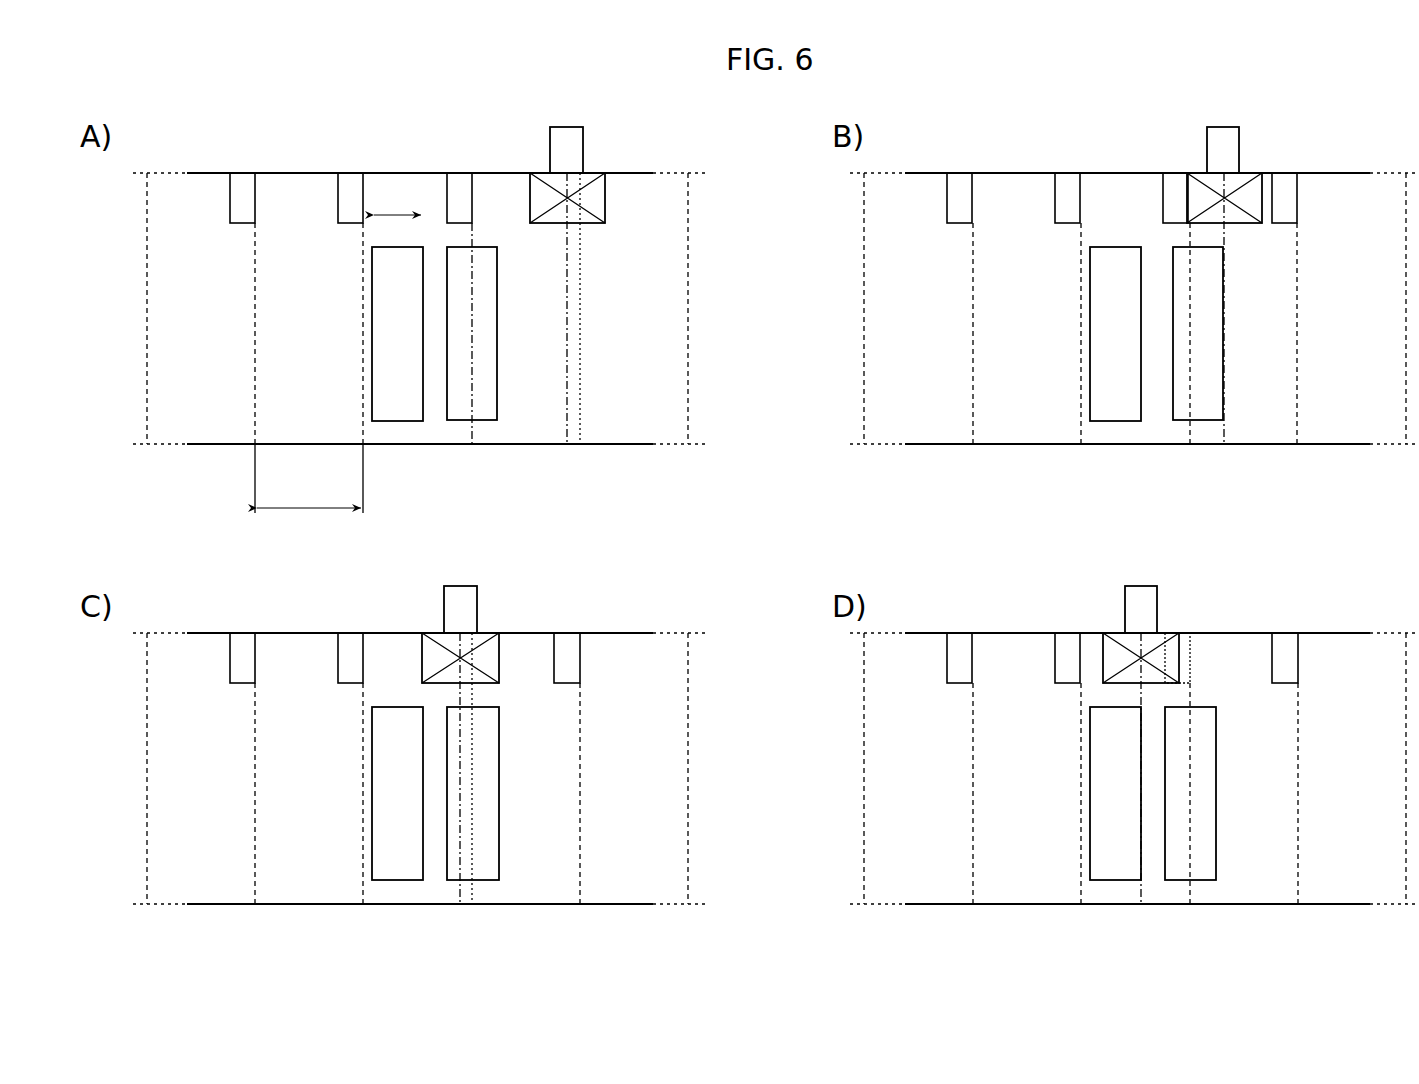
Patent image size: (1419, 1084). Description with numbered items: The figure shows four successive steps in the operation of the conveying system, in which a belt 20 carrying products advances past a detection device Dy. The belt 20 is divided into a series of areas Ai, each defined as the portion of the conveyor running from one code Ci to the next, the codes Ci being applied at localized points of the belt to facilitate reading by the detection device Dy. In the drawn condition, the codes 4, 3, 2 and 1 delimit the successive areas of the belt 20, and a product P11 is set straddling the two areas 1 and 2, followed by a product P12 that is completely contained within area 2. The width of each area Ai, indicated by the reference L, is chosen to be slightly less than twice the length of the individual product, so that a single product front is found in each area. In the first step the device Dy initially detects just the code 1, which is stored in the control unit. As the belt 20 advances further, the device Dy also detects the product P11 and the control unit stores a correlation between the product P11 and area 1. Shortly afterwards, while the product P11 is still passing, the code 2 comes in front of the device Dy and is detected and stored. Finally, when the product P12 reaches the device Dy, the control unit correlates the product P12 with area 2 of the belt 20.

The belt 20 is at (432, 432).
The area Ai is at (205, 188).
The code Ci is at (355, 179).
The code 4 is at (601, 428).
The code 3 is at (709, 428).
The area 2 is at (818, 538).
The area 1 is at (926, 538).
The detection device Dy is at (546, 150).
The product P12 is at (383, 337).
The product P11 is at (487, 313).
The width of the area L is at (309, 478).